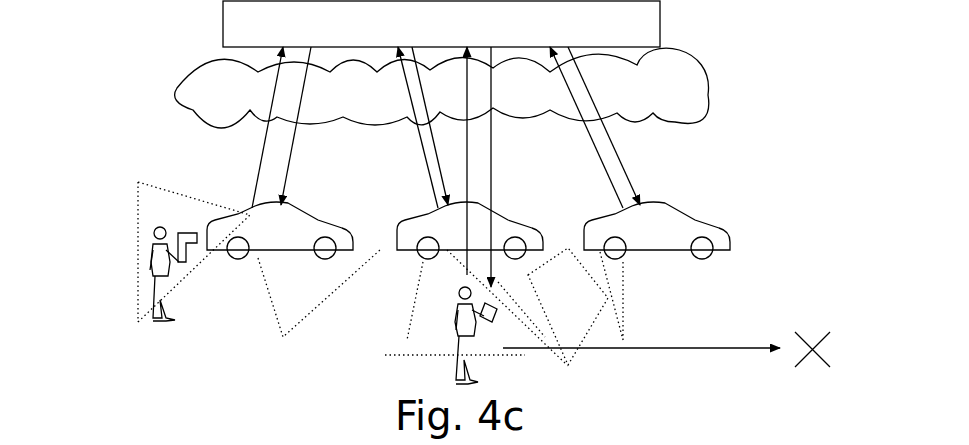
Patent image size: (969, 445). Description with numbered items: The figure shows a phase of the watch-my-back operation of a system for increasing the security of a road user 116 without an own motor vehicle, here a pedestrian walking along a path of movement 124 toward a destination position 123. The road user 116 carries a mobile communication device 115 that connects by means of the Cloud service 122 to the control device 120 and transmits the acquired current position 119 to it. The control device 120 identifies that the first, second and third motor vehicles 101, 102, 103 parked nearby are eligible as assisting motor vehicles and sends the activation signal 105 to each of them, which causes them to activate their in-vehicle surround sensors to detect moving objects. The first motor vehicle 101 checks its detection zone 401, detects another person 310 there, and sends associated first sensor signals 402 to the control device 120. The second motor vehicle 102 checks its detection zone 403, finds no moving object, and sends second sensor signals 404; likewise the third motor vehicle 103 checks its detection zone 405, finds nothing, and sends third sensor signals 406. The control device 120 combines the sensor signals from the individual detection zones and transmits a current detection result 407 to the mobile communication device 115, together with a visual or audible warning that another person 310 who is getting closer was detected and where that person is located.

The control device 120 is at (464, 33).
The Cloud service 122 is at (388, 109).
The first sensor signals 402 is at (262, 142).
The second sensor signals 404 is at (418, 143).
The third sensor signals 406 is at (598, 148).
The activation signal 105 is at (283, 175).
The current position 119 is at (475, 168).
The current detection result 407 is at (497, 137).
The first motor vehicle 101 is at (265, 258).
The second motor vehicle 102 is at (528, 222).
The third motor vehicle 103 is at (703, 223).
The detection zone of the surround sensors of the first motor vehicle 401 is at (138, 204).
The detection zone of the surround sensors of the second motor vehicle 403 is at (430, 290).
The detection zone of the surround sensors of the third motor vehicle 405 is at (638, 270).
The another person 310 is at (140, 272).
The mobile communication device 115 is at (495, 322).
The road user 116 is at (452, 318).
The path of movement 124 is at (726, 345).
The destination position 123 is at (816, 333).